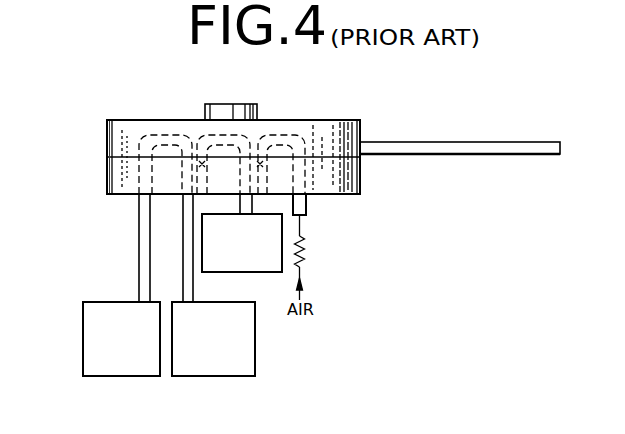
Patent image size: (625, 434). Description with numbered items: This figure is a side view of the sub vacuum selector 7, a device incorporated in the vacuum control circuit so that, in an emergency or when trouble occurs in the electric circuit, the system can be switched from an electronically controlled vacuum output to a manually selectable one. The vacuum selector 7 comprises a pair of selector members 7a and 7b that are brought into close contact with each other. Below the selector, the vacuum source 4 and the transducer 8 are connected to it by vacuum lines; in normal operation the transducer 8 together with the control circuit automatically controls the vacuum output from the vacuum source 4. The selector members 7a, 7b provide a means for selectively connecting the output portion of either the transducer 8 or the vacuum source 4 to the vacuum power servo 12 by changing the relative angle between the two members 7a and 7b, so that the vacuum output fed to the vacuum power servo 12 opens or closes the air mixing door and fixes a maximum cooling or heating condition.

The sub vacuum selector 7 is at (337, 142).
The selector member 7a is at (117, 137).
The selector member 7b is at (118, 173).
The vacuum source 4 is at (143, 378).
The transducer 8 is at (221, 378).
The vacuum power servo 12 is at (259, 273).